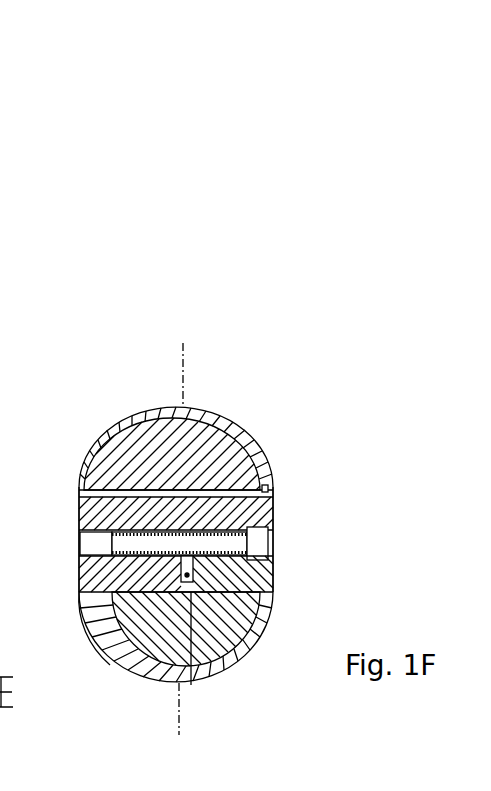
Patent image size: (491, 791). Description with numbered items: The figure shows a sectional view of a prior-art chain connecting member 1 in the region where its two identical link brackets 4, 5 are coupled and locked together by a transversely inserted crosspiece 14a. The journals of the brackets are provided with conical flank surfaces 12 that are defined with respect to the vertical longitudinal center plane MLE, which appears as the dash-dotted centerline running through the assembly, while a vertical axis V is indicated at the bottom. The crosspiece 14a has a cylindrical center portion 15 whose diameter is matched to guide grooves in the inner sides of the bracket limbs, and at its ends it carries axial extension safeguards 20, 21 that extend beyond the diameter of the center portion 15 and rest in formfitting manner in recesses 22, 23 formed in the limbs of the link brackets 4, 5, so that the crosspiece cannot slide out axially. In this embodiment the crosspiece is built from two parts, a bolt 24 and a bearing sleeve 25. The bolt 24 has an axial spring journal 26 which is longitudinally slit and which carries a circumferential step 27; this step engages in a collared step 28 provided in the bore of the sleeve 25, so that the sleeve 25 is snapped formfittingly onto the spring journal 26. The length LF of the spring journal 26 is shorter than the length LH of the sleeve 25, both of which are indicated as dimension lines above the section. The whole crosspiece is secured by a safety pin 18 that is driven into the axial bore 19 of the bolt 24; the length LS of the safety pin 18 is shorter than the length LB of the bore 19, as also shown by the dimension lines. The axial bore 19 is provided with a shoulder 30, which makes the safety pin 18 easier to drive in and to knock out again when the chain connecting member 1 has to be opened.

The chain connecting member 1 is at (288, 396).
The link bracket 4 is at (206, 406).
The link bracket 5 is at (98, 661).
The conical flank surface 12 is at (228, 462).
The crosspiece 14a is at (70, 500).
The cylindrical center portion 15 is at (140, 590).
The safety pin 18 is at (250, 547).
The axial bore 19 is at (167, 495).
The axial extension safeguard 20 is at (78, 602).
The axial extension safeguard 21 is at (273, 463).
The recess 22 is at (82, 478).
The recess 23 is at (267, 615).
The bolt 24 is at (78, 522).
The bearing sleeve 25 is at (266, 490).
The axial spring journal 26 is at (223, 594).
The circumferential step 27 is at (240, 508).
The collared step 28 is at (248, 582).
The shoulder 30 is at (78, 608).
The vertical axis V is at (191, 632).
The vertical longitudinal center plane MLE is at (185, 524).
The length of the sleeve LH is at (200, 33).
The length of spring journal LF is at (298, 108).
The length of the bore LB is at (84, 142).
The length of safety pin LS is at (112, 233).